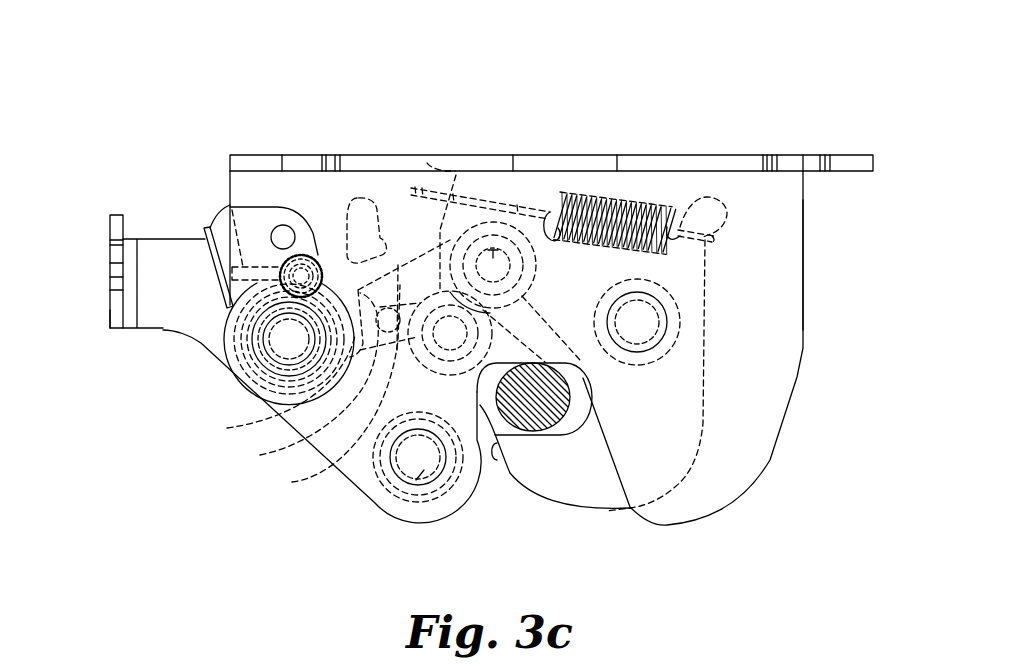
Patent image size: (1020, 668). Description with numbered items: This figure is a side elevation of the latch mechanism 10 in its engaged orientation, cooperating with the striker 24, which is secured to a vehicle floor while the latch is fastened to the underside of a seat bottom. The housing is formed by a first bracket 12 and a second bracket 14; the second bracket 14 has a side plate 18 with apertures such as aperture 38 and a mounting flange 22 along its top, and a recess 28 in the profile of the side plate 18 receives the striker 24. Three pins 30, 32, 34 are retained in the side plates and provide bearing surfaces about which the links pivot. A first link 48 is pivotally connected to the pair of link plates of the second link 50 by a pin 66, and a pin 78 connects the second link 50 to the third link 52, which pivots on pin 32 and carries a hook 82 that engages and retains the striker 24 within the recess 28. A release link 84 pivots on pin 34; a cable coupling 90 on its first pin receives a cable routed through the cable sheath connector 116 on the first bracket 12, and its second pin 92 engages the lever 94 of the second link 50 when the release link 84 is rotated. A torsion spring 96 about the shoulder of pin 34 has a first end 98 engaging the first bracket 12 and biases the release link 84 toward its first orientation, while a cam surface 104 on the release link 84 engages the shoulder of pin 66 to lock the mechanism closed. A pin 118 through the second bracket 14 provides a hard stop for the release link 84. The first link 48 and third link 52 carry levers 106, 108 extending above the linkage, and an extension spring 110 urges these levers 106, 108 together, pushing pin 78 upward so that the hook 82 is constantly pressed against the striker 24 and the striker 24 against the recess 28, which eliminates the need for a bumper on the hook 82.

The latch mechanism 10 is at (415, 70).
The first bracket 12 is at (110, 315).
The second bracket 14 is at (796, 376).
The side plate 18 is at (803, 302).
The mounting flange 22 is at (840, 156).
The striker 24 is at (540, 436).
The recess 28 is at (498, 437).
The pin 30 is at (417, 455).
The pin 32 is at (640, 322).
The pin 34 is at (292, 340).
The aperture 38 is at (416, 480).
The first link 48 is at (455, 170).
The second link 50 is at (400, 285).
The third link 52 is at (707, 192).
The pin 66 is at (330, 391).
The pin 78 is at (510, 240).
The hook 82 is at (610, 512).
The release link 84 is at (350, 198).
The cable coupling 90 is at (232, 210).
The second pin 92 is at (305, 381).
The lever 94 is at (275, 389).
The torsion spring 96 is at (213, 290).
The first end 98 is at (206, 226).
The cam surface 104 is at (440, 268).
The lever 106 is at (419, 252).
The lever 108 is at (720, 197).
The extension spring 110 is at (602, 192).
The cable sheath connector 116 is at (110, 300).
The pin 118 is at (282, 224).